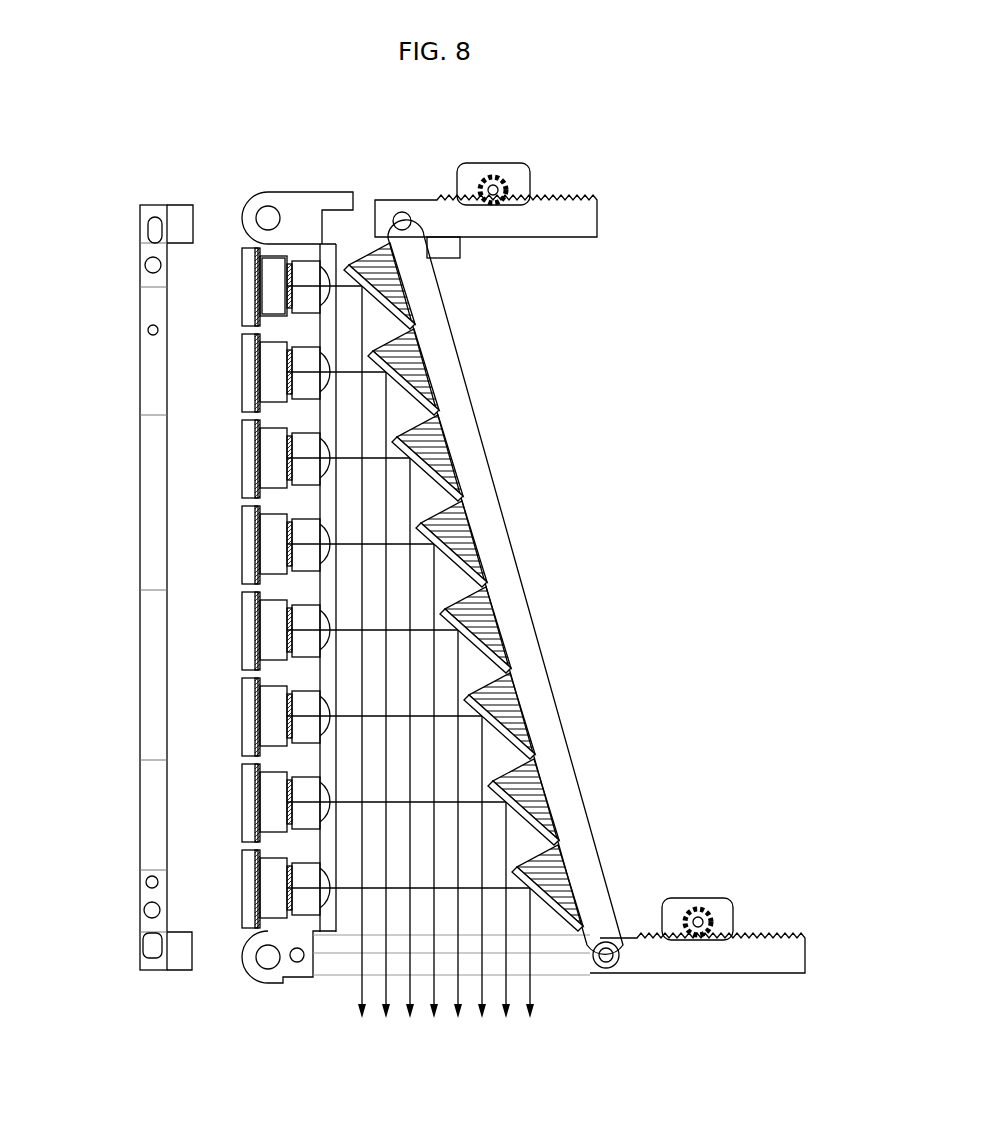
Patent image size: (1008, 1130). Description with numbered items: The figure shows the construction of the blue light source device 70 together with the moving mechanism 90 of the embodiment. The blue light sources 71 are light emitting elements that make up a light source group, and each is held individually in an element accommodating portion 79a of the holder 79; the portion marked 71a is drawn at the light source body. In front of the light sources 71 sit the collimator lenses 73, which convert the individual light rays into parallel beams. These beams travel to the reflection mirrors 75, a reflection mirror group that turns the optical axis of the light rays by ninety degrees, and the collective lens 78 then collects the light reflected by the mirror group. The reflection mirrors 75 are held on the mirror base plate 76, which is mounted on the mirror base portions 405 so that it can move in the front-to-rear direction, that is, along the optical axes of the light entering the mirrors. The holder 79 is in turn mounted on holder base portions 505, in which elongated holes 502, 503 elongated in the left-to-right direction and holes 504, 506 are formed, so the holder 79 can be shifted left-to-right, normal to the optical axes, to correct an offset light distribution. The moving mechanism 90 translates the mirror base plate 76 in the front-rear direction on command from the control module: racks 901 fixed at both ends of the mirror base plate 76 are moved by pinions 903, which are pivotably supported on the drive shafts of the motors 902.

The blue light source device 70 is at (563, 985).
The blue light source 71 is at (272, 373).
The light emitting element substrate 71a is at (267, 283).
The collimator lens 73 is at (297, 458).
The reflection mirror 75 is at (462, 478).
The mirror base plate 76 is at (455, 418).
The collective lens 78 is at (533, 950).
The holder 79 is at (200, 445).
The element accommodating portion 79a is at (250, 245).
The moving mechanism 90 is at (622, 593).
The rack 901 is at (503, 227).
The motor 902 is at (517, 185).
The pinion gear 903 is at (513, 186).
The mirror base portion 405 is at (358, 230).
The elongated hole 502 is at (150, 232).
The elongated hole 503 is at (150, 945).
The upper mounting hole 504 is at (146, 268).
The holder base portion 505 is at (177, 228).
The hole 506 is at (146, 910).